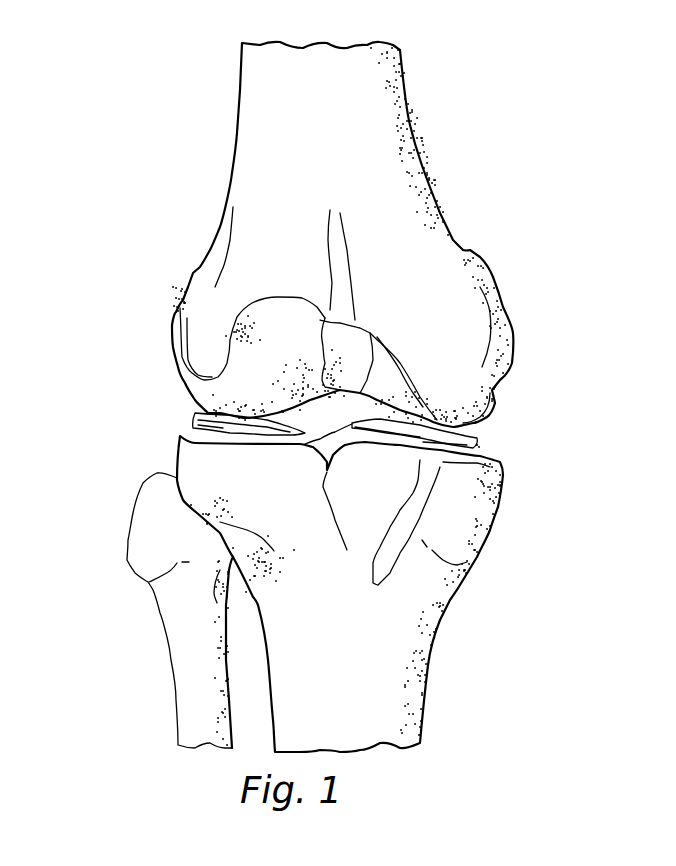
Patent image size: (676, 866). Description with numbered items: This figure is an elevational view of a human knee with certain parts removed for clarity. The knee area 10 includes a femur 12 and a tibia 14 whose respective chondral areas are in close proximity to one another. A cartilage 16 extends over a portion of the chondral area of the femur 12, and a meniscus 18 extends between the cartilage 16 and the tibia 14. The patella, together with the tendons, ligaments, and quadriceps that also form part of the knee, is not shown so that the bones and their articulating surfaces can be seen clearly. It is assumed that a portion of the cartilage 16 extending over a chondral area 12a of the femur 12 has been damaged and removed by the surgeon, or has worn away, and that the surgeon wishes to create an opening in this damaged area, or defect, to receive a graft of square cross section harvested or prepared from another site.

The knee area 10 is at (112, 376).
The femur 12 is at (509, 345).
The chondral area 12a is at (360, 353).
The tibia 14 is at (428, 672).
The cartilage 16 is at (277, 330).
The meniscus 18 is at (480, 440).